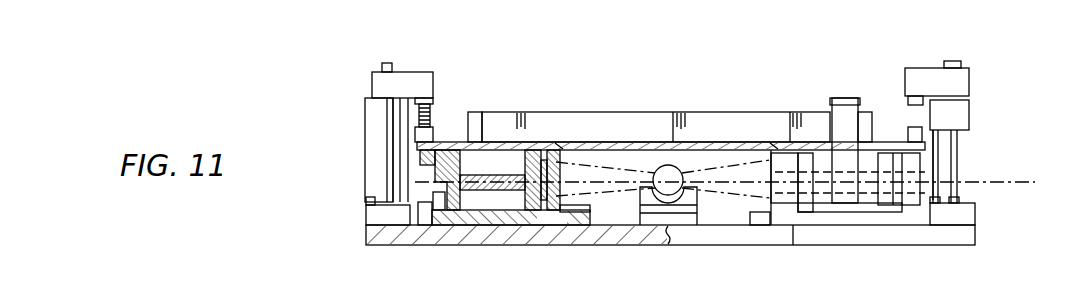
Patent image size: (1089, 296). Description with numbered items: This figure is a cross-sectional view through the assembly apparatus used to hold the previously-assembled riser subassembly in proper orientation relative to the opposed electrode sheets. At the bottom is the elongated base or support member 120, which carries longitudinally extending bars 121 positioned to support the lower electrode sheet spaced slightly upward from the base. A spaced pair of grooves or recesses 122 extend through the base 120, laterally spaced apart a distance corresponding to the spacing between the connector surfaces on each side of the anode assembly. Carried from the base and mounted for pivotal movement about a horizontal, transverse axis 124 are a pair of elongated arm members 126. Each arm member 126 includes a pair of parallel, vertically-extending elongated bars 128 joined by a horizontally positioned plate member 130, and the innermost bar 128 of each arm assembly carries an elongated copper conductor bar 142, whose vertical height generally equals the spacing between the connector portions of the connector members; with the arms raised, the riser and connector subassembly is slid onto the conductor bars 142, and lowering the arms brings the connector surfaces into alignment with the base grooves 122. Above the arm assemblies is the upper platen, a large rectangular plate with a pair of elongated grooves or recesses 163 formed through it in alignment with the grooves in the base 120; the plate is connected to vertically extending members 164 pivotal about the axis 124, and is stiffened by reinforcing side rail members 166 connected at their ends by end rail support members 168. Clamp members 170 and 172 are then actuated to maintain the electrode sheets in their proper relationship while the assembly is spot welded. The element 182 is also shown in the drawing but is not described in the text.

The base member 120 is at (879, 246).
The longitudinally extending bars 121 is at (571, 213).
The grooves 122 is at (543, 214).
The horizontal transverse axis 124 is at (998, 183).
The arm members 126 is at (472, 207).
The vertically-extending elongated bars 128 is at (449, 212).
The plate member 130 is at (515, 175).
The conductor bar 142 is at (556, 166).
The grooves 163 is at (558, 143).
The vertically extending members 164 is at (844, 102).
The reinforcing side rail members 166 is at (466, 120).
The end rail support members 168 is at (655, 112).
The clamp member 170 is at (932, 60).
The clamp member 172 is at (392, 47).
The rod 182 is at (934, 132).